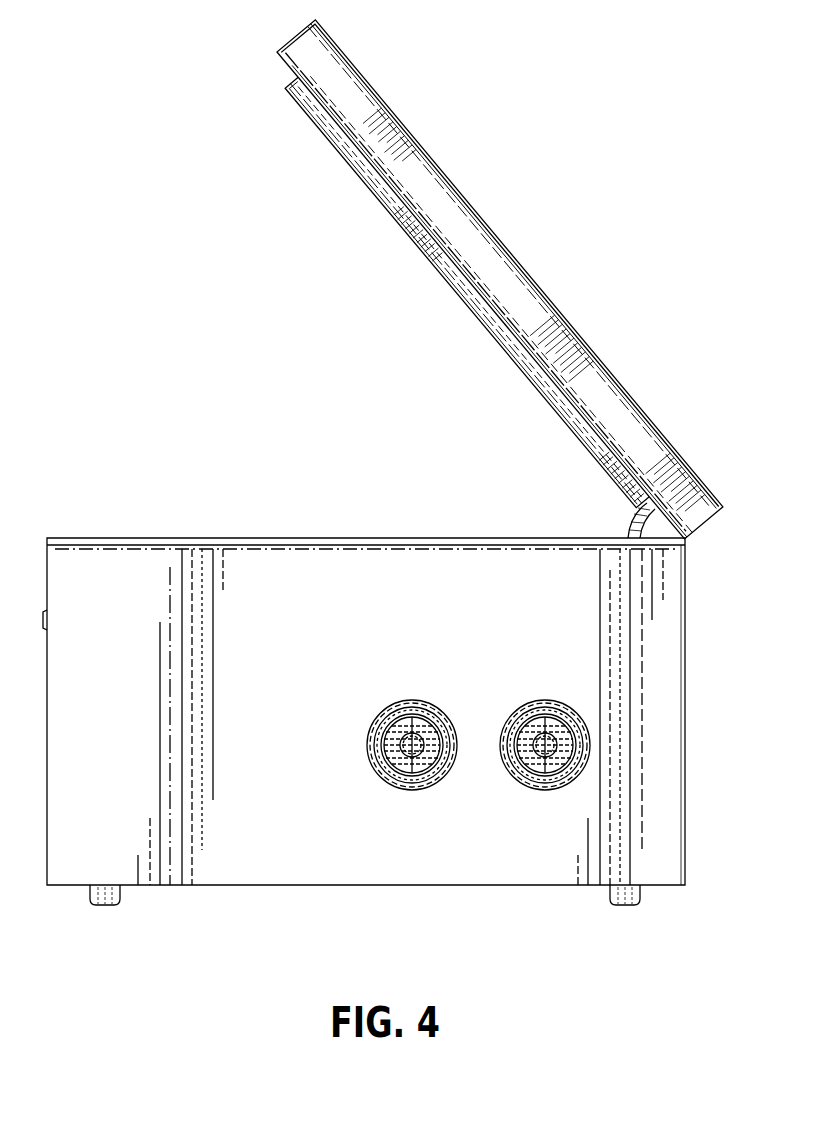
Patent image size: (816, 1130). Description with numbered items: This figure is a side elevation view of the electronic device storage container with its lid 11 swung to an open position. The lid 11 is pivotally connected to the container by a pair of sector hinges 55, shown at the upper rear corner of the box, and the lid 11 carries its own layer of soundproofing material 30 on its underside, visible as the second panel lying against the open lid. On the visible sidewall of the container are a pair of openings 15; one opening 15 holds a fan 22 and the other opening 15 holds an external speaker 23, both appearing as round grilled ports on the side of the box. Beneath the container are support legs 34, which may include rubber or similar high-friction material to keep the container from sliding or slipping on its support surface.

The lid 11 is at (536, 297).
The soundproofing material 30 is at (467, 296).
The sector hinges 55 is at (627, 530).
The openings 15 is at (412, 700).
The fan 22 is at (406, 768).
The external speaker 23 is at (539, 768).
The support legs 34 is at (125, 891).